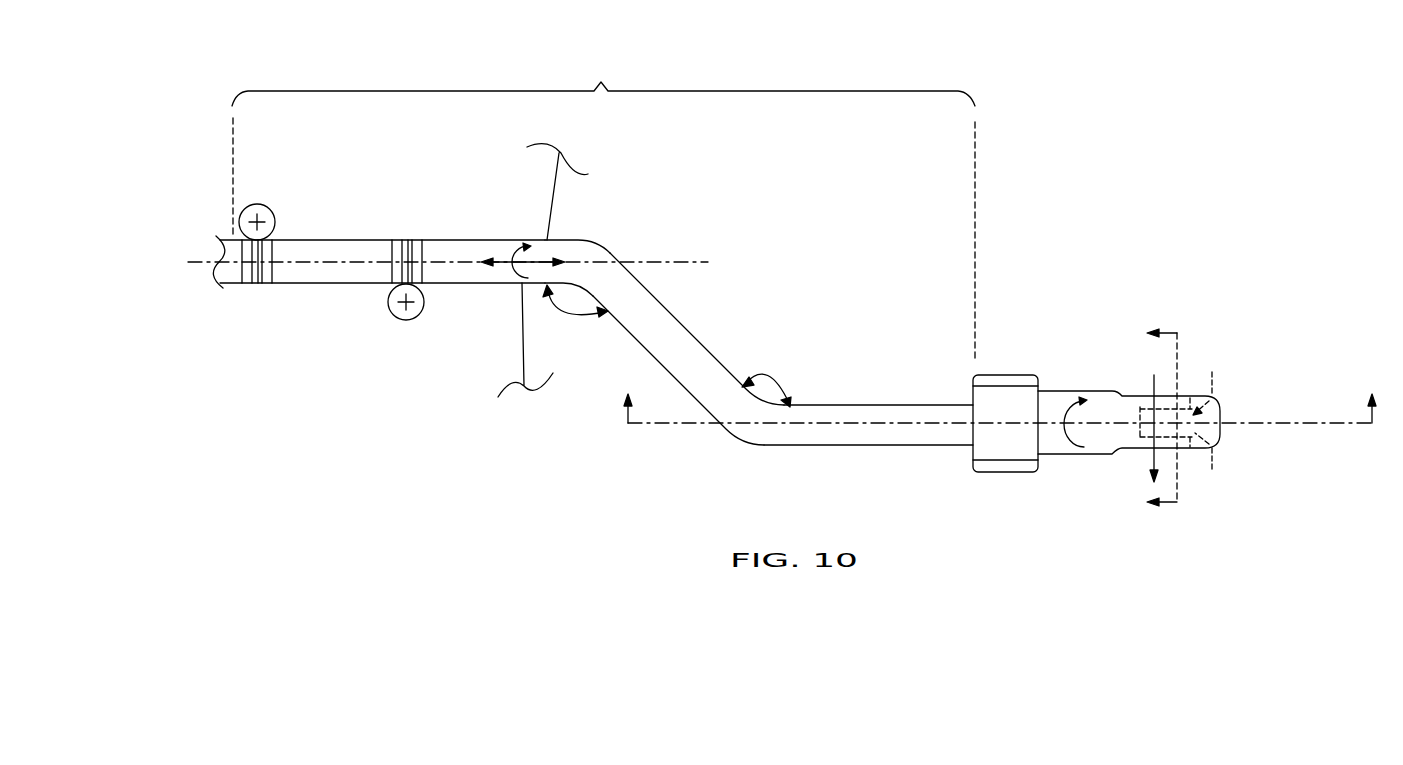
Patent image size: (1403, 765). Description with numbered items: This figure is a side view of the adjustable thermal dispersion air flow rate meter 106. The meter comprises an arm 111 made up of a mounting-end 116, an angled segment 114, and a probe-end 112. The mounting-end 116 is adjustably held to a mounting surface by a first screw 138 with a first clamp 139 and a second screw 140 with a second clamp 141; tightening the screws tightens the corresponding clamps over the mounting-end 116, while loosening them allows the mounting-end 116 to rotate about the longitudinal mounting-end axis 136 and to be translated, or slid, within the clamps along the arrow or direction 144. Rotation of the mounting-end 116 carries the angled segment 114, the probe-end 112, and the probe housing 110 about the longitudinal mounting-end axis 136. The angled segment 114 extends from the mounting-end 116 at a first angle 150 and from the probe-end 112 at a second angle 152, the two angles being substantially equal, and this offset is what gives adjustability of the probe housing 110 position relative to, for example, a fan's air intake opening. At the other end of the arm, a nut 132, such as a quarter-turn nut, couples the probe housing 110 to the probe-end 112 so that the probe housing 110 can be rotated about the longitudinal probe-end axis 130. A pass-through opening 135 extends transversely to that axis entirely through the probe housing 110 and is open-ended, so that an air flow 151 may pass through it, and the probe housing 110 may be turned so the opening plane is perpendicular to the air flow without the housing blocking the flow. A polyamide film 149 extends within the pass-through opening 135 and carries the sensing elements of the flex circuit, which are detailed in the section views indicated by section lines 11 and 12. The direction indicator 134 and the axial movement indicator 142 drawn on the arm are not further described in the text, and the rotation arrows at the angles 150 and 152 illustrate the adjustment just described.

The adjustable thermal dispersion air flow rate meter 106 is at (855, 232).
The probe housing 110 is at (1101, 391).
The arm 111 is at (603, 206).
The probe-end 112 is at (820, 405).
The angled segment 114 is at (676, 318).
The mounting-end 116 is at (368, 240).
The longitudinal probe-end axis 130 is at (922, 423).
The nut 132 is at (1007, 375).
The rotation direction 134 is at (1071, 401).
The pass-through opening 135 is at (1212, 450).
The longitudinal mounting-end axis 136 is at (662, 262).
The first screw 138 is at (406, 321).
The first clamp 139 is at (424, 252).
The second screw 140 is at (259, 204).
The second clamp 141 is at (273, 268).
The axial movement 142 is at (513, 241).
The arrow/direction 144 is at (542, 241).
The polyamide film 149 is at (1211, 371).
The first angle 150 is at (563, 320).
The air flow 151 is at (1152, 452).
The second angle 152 is at (781, 380).
The section line 11- 11 is at (1150, 418).
The section line 12- 12 is at (990, 393).